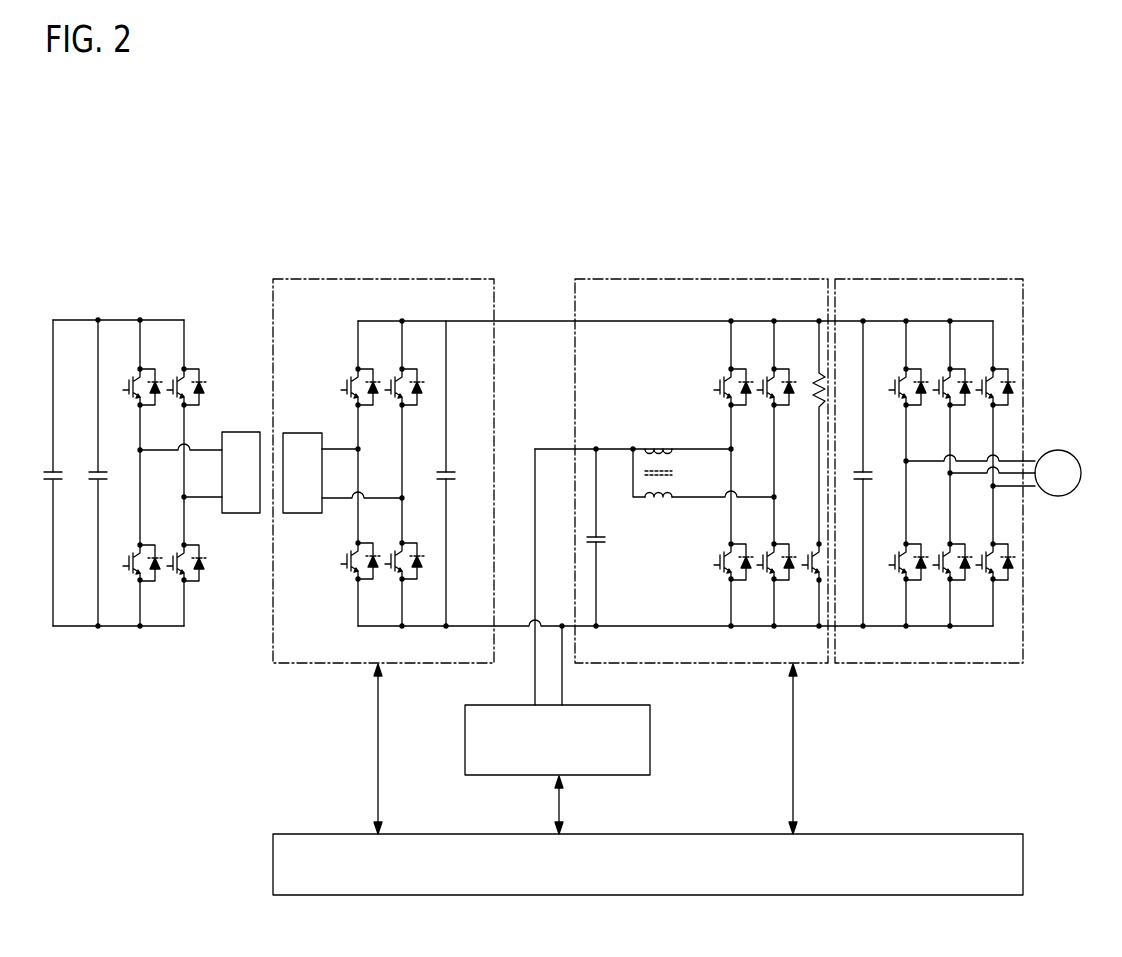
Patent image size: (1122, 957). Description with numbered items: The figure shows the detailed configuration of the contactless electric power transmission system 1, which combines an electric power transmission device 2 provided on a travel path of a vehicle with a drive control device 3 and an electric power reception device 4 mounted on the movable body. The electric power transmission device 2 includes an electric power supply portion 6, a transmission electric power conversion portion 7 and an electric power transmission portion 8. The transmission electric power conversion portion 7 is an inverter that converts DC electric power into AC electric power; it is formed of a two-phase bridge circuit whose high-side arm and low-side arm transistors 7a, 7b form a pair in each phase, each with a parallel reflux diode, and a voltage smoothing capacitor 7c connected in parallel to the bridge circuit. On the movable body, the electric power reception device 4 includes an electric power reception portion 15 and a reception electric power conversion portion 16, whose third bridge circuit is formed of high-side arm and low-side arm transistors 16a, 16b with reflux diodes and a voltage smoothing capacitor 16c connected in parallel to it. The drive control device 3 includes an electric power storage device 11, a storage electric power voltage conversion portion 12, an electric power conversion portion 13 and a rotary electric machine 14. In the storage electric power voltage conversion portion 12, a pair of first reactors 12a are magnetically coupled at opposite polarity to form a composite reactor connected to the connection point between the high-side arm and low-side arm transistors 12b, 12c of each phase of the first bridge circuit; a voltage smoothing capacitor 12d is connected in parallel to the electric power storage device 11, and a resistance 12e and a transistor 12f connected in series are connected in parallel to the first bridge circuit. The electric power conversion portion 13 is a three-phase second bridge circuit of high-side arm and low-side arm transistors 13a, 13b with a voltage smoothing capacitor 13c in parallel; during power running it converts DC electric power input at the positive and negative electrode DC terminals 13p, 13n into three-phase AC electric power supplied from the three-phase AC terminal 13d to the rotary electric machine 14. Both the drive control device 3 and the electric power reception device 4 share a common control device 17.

The contactless electric power transmission system 1 is at (1045, 170).
The electric power transmission device 2 is at (227, 279).
The drive control device 3 is at (1017, 233).
The electric power reception device 4 is at (465, 278).
The electric power supply portion 6 is at (58, 470).
The transmission electric power conversion portion 7 is at (184, 321).
The high-side arm transistor 7a is at (184, 368).
The low-side arm transistor 7b is at (184, 580).
The voltage smoothing capacitor 7c is at (105, 470).
The electric power transmission portion 8 is at (240, 432).
The electric power storage device 11 is at (650, 752).
The storage electric power voltage conversion portion 12 is at (600, 278).
The first reactor 12a is at (658, 449).
The high-side arm transistor 12b is at (774, 368).
The low-side arm transistor 12c is at (774, 579).
The voltage smoothing capacitor 12d is at (604, 547).
The resistance 12e is at (819, 372).
The transistor 12f is at (819, 544).
The electric power conversion portion 13 is at (1024, 297).
The high-side arm transistor 13a is at (993, 368).
The low-side arm transistor 13b is at (993, 579).
The voltage smoothing capacitor 13c is at (866, 470).
The three-phase AC terminal 13d is at (906, 461).
The positive electrode DC terminal 13p is at (863, 320).
The negative electrode DC terminal 13n is at (863, 627).
The rotary electric machine 14 is at (1058, 450).
The electric power reception portion 15 is at (302, 433).
The reception electric power conversion portion 16 is at (370, 320).
The high-side arm transistor 16a is at (402, 368).
The low-side arm transistor 16b is at (402, 543).
The voltage smoothing capacitor 16c is at (446, 470).
The control device 17 is at (985, 834).